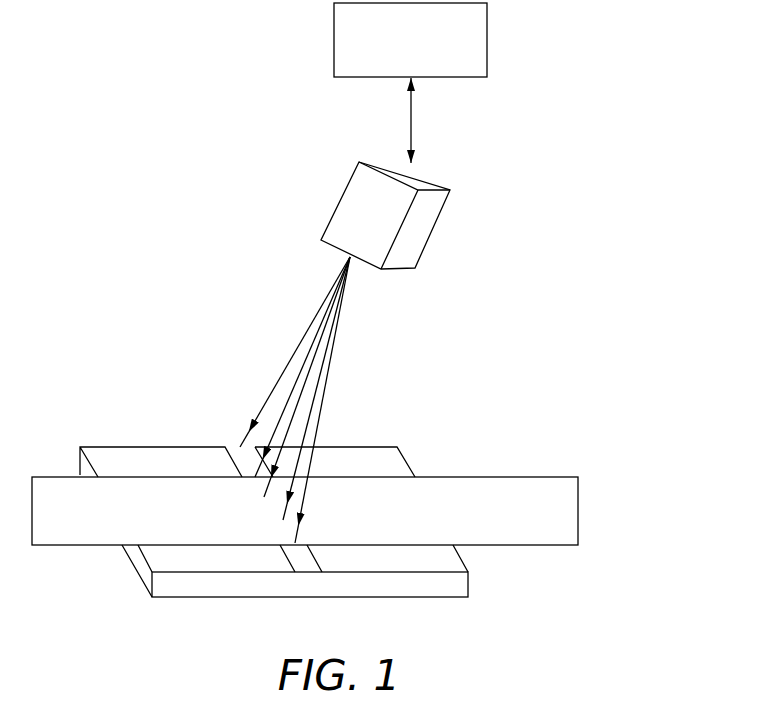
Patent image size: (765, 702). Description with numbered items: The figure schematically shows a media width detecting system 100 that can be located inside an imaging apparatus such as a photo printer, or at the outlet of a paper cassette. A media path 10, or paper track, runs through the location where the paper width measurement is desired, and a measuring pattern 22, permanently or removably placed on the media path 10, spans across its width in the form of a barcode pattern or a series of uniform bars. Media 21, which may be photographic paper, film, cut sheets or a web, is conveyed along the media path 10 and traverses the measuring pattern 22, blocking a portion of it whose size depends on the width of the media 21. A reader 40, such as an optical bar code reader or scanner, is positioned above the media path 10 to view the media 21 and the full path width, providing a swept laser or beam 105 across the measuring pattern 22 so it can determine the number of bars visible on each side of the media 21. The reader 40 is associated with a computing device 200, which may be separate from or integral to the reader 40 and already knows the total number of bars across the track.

The media width detecting system 100 is at (177, 216).
The computing device 200 is at (487, 40).
The reader 40 is at (435, 228).
The swept laser or beam 105 is at (325, 400).
The media path 10 is at (166, 450).
The media 21 is at (578, 512).
The measuring pattern 22 is at (309, 562).